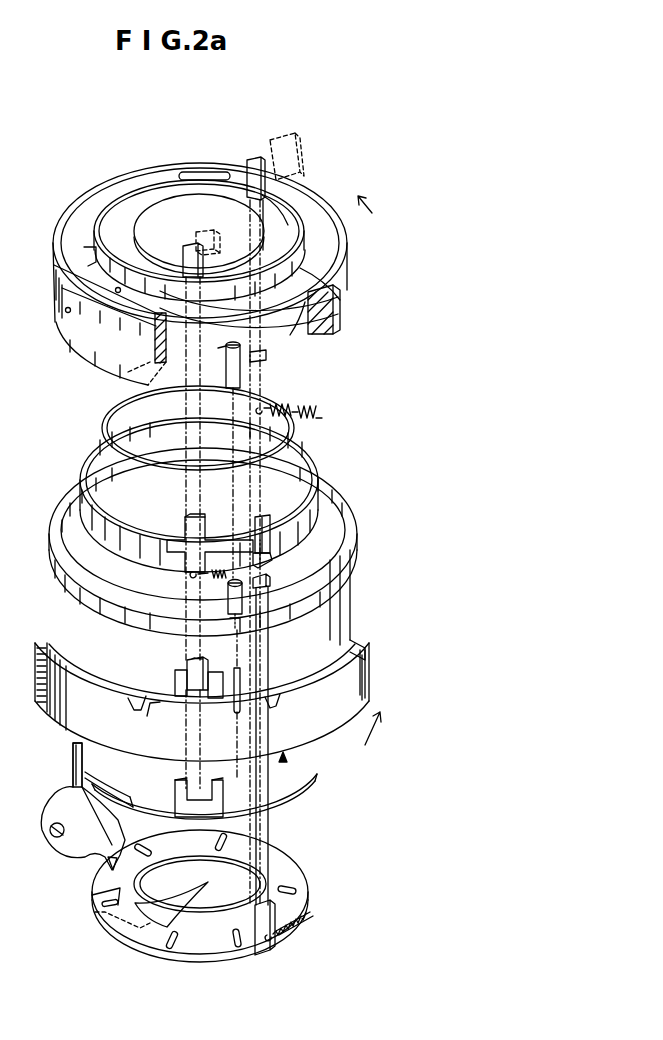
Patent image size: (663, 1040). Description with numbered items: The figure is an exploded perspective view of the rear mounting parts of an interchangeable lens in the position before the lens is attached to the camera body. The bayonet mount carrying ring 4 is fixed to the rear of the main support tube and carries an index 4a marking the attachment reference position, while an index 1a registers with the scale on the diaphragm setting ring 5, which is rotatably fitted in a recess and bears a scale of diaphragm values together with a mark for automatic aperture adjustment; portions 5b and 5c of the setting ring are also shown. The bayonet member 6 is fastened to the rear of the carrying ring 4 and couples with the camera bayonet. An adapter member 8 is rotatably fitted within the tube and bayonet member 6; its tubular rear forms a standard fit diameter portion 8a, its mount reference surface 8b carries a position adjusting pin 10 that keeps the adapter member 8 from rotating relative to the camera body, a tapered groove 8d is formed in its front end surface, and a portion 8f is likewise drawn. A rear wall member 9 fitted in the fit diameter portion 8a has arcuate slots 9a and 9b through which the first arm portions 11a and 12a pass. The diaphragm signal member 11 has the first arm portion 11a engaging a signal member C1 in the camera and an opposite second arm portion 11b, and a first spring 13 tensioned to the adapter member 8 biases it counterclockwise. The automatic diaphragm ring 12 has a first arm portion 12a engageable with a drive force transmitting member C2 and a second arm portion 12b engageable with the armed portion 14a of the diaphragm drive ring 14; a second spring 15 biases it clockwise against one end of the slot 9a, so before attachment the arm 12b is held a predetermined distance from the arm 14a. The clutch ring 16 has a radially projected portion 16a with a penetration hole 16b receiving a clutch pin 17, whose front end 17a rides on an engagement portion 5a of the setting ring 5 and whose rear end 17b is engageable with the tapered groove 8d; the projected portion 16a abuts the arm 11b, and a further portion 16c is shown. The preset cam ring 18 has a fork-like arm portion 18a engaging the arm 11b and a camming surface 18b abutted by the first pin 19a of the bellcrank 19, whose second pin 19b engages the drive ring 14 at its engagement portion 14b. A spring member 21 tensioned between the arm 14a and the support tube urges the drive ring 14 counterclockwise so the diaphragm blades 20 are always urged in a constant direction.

The index 1a is at (290, 757).
The bayonet mount carrying ring 4 is at (100, 365).
The index 4a is at (66, 310).
The diaphragm setting ring 5 is at (369, 665).
The engagement portion 5a is at (158, 708).
The notch 5b is at (274, 704).
The notch 5c is at (130, 706).
The bayonet member 6 is at (82, 270).
The adapter member 8 is at (278, 325).
The standard fit diameter portion 8a is at (312, 268).
The mount reference surface 8b is at (290, 330).
The tapered groove 8d is at (222, 348).
The cross section portion 8f is at (322, 322).
The rear wall member 9 is at (298, 246).
The arcuate slot 9a is at (215, 172).
The arcuate slot 9b is at (282, 205).
The position adjusting pin 10 is at (116, 290).
The diaphragm signal member 11 is at (102, 528).
The first arm portion 11a is at (188, 258).
The second arm portion 11b is at (190, 664).
The automatic diaphragm ring 12 is at (104, 428).
The first arm portion 12a is at (252, 160).
The second arm portion 12b is at (262, 558).
The first spring 13 is at (228, 574).
The diaphragm drive ring 14 is at (280, 858).
The armed portion 14a is at (261, 586).
The engagement portion 14b is at (110, 895).
The second spring 15 is at (322, 417).
The clutch ring 16 is at (335, 500).
The projected portion 16a is at (340, 592).
The penetration hole 16b is at (235, 625).
The tab 16c is at (345, 630).
The clutch pin 17 is at (226, 597).
The front end 17a is at (242, 705).
The rear end 17b is at (252, 357).
The preset cam ring 18 is at (285, 785).
The fork-like arm portion 18a is at (178, 795).
The camming surface 18b is at (97, 790).
The bellcrank 19 is at (70, 848).
The first pin 19a is at (73, 764).
The second pin 19b is at (110, 864).
The diaphragm blades 20 is at (198, 890).
The spring member 21 is at (310, 918).
The signal member C1 is at (210, 230).
The drive force transmitting member C2 is at (298, 150).